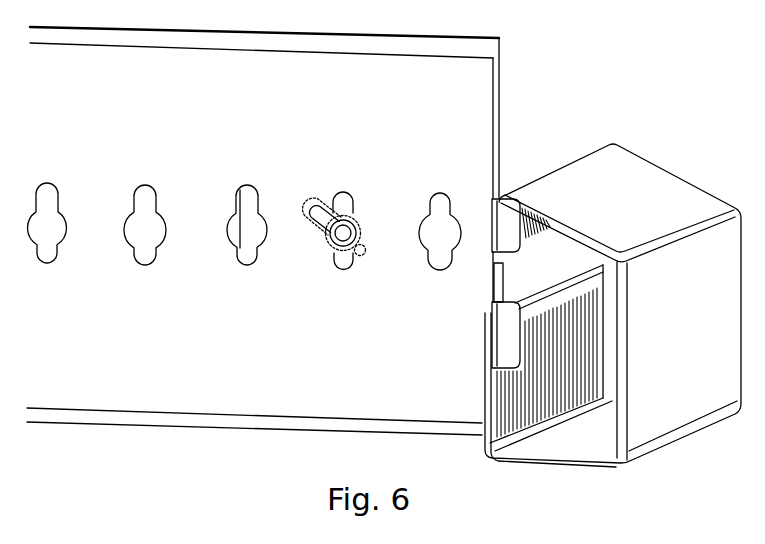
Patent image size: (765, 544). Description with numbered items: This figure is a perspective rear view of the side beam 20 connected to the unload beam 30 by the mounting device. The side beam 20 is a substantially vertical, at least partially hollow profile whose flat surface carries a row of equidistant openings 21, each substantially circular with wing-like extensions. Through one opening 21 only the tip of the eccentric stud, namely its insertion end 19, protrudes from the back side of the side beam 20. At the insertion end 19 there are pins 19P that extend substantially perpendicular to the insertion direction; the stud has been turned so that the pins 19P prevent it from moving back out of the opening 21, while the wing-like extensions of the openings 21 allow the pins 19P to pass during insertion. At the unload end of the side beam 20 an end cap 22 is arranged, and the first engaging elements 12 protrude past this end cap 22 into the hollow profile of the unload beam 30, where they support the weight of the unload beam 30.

The side beam 20 is at (480, 107).
The opening 21 is at (138, 233).
The insertion end 19 is at (357, 227).
The pin 19P is at (317, 218).
The first engaging element 12 is at (508, 233).
The end cap 22 is at (502, 285).
The unload beam 30 is at (655, 187).